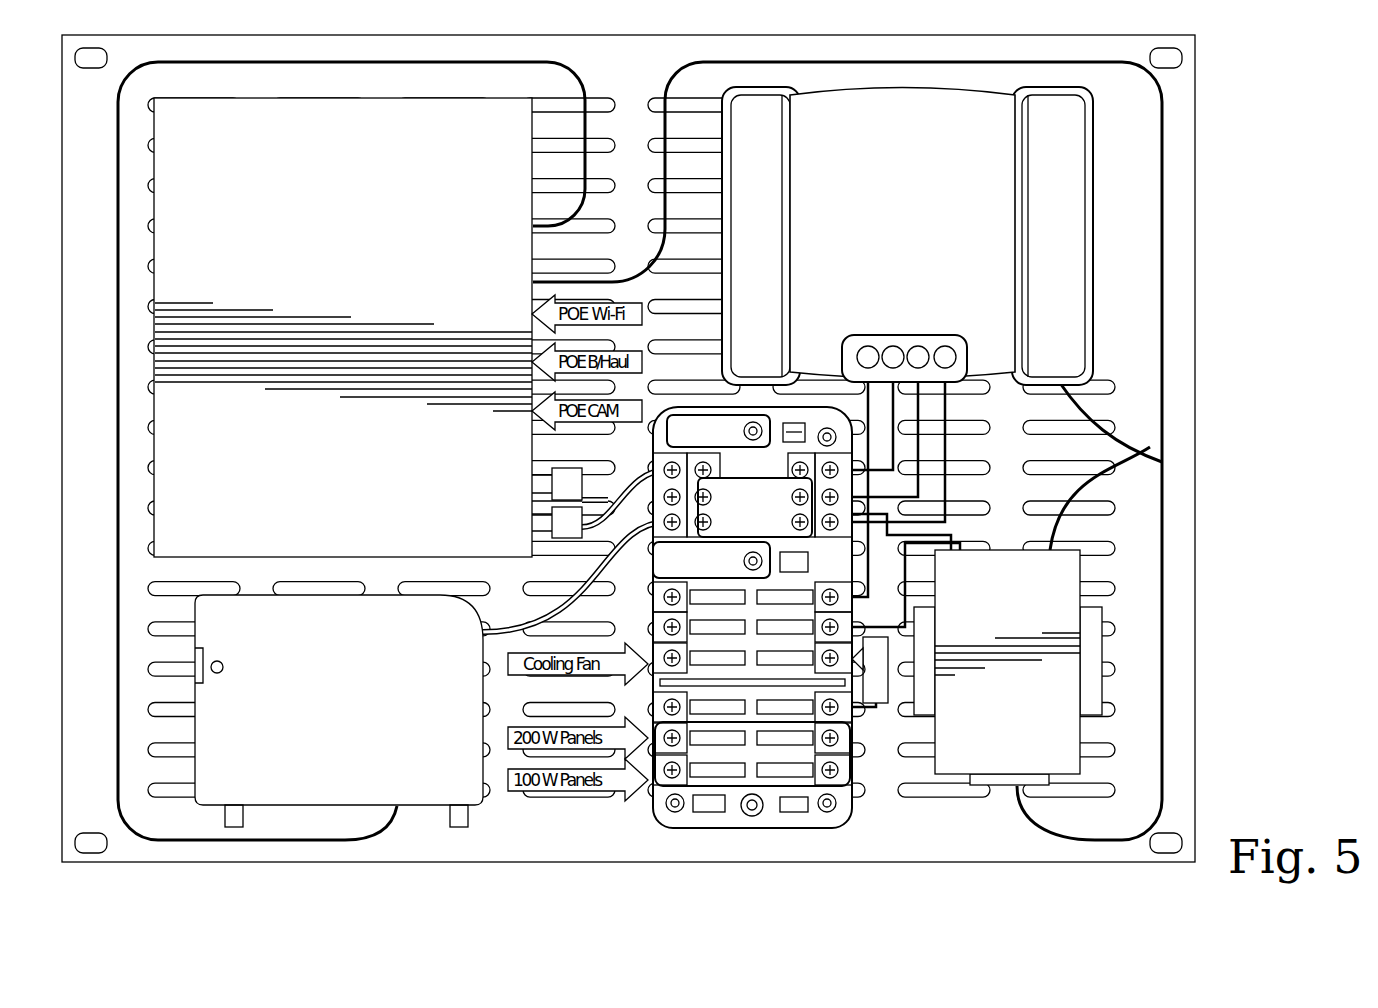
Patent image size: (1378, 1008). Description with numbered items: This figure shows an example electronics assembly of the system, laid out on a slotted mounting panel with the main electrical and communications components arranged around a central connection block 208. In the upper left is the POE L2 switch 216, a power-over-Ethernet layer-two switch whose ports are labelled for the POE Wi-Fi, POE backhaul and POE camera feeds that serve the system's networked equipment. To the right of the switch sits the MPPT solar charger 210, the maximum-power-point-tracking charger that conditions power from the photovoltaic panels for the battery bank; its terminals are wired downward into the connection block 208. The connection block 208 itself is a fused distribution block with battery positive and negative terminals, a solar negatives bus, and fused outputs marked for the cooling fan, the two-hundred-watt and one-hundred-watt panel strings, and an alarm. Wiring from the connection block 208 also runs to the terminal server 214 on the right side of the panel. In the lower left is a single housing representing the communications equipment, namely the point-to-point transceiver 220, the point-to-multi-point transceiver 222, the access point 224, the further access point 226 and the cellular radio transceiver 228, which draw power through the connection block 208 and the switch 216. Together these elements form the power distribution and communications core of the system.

The connection block 208 is at (780, 820).
The MPPT solar charger 210 is at (889, 162).
The terminal server 214 is at (991, 712).
The POE L2 switch 216 is at (341, 197).
The point-to-point transceiver 220 is at (339, 711).
The point-to-multi-point transceiver 222 is at (339, 711).
The access point 224 is at (339, 711).
The further access point 226 is at (339, 711).
The cellular radio transceiver 228 is at (258, 694).